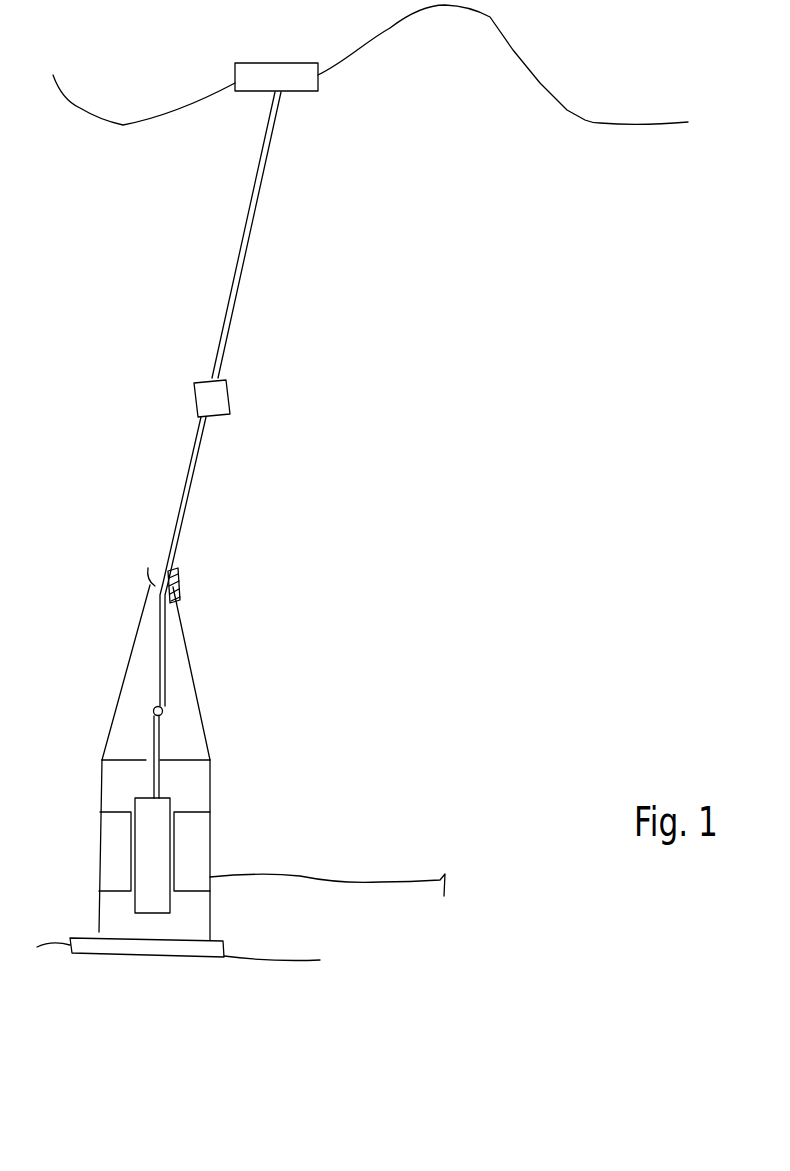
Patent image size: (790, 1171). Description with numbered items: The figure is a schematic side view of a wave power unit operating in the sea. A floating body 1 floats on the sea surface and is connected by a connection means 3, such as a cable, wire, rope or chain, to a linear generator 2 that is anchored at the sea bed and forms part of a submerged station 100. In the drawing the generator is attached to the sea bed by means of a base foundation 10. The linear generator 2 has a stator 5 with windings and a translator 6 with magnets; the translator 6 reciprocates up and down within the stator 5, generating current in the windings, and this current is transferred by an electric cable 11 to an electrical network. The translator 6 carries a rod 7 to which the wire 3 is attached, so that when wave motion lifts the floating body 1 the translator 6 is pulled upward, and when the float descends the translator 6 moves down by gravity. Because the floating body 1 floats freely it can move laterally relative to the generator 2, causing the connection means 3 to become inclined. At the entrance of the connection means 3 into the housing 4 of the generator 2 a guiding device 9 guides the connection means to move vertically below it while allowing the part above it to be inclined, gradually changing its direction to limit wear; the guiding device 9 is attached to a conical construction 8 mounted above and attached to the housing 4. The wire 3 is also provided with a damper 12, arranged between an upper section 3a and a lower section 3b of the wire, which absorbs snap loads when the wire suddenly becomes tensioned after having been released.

The floating body 1 is at (280, 65).
The linear generator 2 is at (302, 829).
The connection means 3 is at (235, 399).
The upper section 3a is at (253, 213).
The lower section 3b is at (195, 478).
The housing 4 is at (213, 785).
The stator 5 is at (205, 850).
The translator 6 is at (158, 894).
The rod 7 is at (160, 740).
The conical construction 8 is at (190, 647).
The guiding device 9 is at (182, 578).
The base foundation 10 is at (206, 956).
The electric cable 11 is at (400, 882).
The damper 12 is at (231, 402).
The submerged station 100 is at (356, 651).